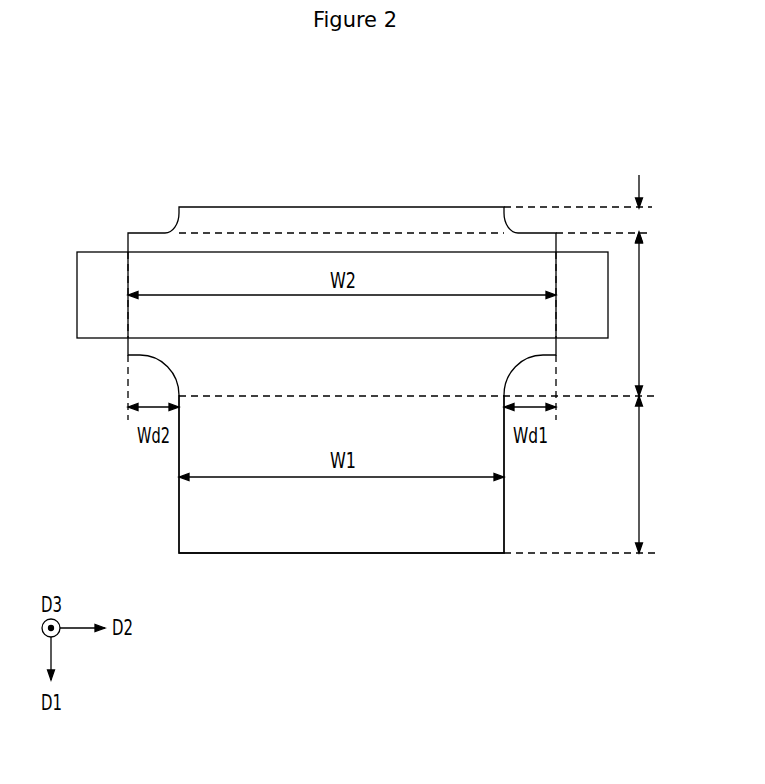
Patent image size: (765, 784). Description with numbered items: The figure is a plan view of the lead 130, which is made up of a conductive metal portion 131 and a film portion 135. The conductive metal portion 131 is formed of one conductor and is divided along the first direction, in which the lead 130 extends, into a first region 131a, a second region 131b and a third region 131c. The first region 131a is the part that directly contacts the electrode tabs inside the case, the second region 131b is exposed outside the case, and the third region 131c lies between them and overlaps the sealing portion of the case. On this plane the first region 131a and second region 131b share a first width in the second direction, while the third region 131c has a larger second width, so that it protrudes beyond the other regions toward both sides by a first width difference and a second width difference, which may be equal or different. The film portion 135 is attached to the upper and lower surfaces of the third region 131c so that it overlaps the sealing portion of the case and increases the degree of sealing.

The lead 130 is at (370, 157).
The conductive metal portion 131 is at (179, 507).
The first region 131a is at (662, 208).
The second region 131b is at (662, 474).
The third region 131c is at (662, 314).
The film portion 135 is at (77, 294).